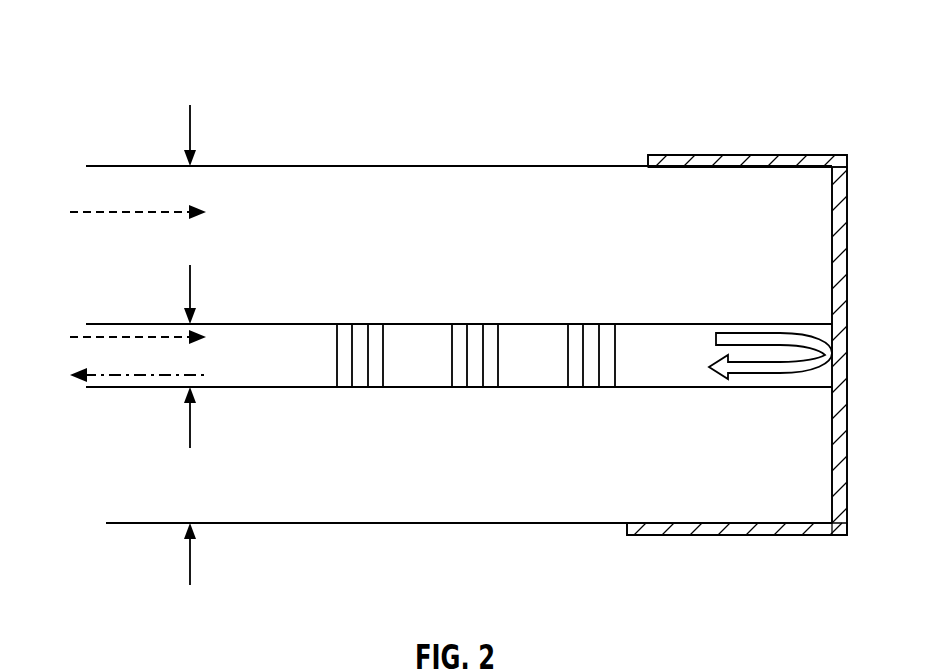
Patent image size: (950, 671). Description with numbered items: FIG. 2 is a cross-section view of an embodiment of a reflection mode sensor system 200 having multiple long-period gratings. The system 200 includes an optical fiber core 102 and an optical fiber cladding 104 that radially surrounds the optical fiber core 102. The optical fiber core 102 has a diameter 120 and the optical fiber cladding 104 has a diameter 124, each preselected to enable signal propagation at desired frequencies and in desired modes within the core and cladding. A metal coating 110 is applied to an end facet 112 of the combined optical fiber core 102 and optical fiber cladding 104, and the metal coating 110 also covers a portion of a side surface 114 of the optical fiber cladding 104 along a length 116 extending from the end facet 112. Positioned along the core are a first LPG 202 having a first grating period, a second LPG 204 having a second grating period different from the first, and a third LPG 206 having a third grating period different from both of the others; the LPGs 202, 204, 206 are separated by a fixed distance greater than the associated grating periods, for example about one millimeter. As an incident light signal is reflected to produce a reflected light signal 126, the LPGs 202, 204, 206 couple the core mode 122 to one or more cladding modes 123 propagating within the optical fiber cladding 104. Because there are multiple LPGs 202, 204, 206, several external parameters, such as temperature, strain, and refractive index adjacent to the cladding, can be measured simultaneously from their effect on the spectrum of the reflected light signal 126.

The reflection mode sensor system 200 is at (98, 50).
The optical fiber cladding 104 is at (162, 166).
The optical fiber core 102 is at (137, 324).
The diameter 124 is at (192, 128).
The diameter 120 is at (190, 418).
The cladding modes 123 is at (100, 213).
The core mode 122 is at (98, 338).
The reflected light signal 126 is at (165, 374).
The first LPG 202 is at (383, 323).
The second LPG 204 is at (498, 323).
The third LPG 206 is at (615, 323).
The metal coating 110 is at (777, 343).
The end facet 112 is at (850, 205).
The side surface 114 is at (728, 145).
The length 116 is at (847, 538).